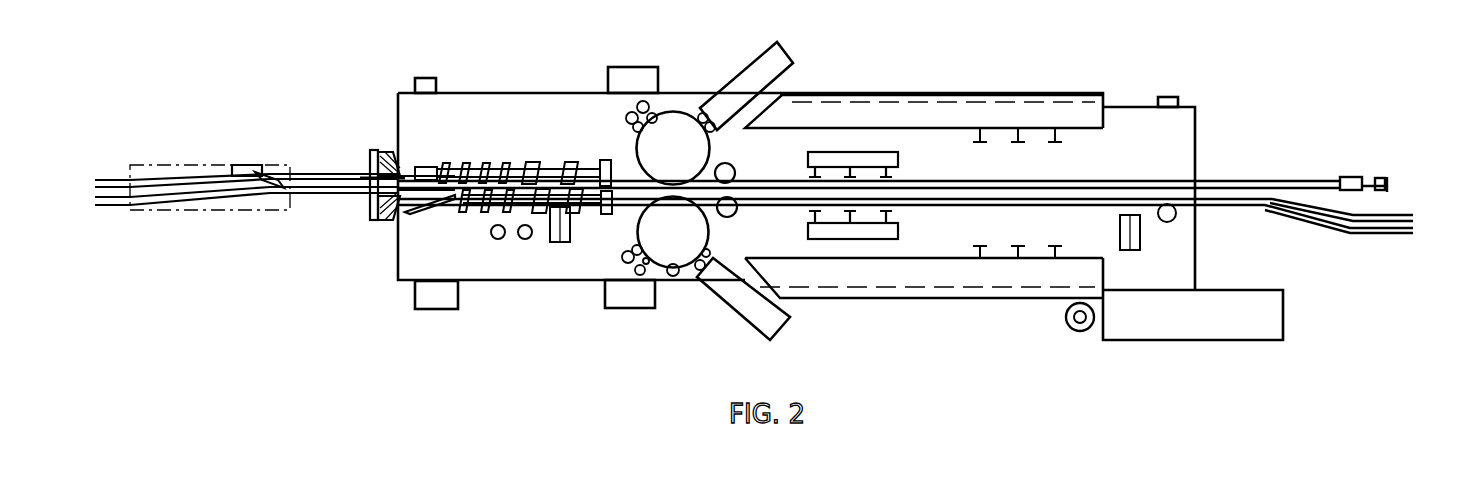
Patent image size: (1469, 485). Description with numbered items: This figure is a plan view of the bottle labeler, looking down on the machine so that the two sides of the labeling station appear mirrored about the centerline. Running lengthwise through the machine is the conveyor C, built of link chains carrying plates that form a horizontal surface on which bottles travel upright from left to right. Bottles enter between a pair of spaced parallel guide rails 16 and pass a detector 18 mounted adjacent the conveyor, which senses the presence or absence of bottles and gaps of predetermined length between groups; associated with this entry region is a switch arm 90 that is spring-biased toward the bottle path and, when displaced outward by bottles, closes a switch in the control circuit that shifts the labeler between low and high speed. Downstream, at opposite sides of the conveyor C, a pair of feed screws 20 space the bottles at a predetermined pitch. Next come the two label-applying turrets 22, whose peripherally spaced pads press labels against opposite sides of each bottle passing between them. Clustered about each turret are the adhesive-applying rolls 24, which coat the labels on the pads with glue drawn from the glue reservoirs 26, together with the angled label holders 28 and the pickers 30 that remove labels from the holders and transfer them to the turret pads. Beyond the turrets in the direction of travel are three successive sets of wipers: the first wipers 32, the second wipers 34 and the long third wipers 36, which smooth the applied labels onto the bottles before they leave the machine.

The guide rails 16 is at (325, 187).
The detector 18 is at (245, 165).
The switch arm 90 is at (268, 190).
The conveyor C is at (350, 192).
The feed screws 20 is at (480, 200).
The label-applying turrets 22 is at (637, 145).
The adhesive-applying rolls 24 is at (626, 118).
The glue reservoirs 26 is at (628, 72).
The label holders 28 is at (740, 88).
The pickers 30 is at (715, 130).
The first set of wipers 32 is at (728, 175).
The second set of wipers 34 is at (830, 152).
The third set of wipers 36 is at (1005, 135).